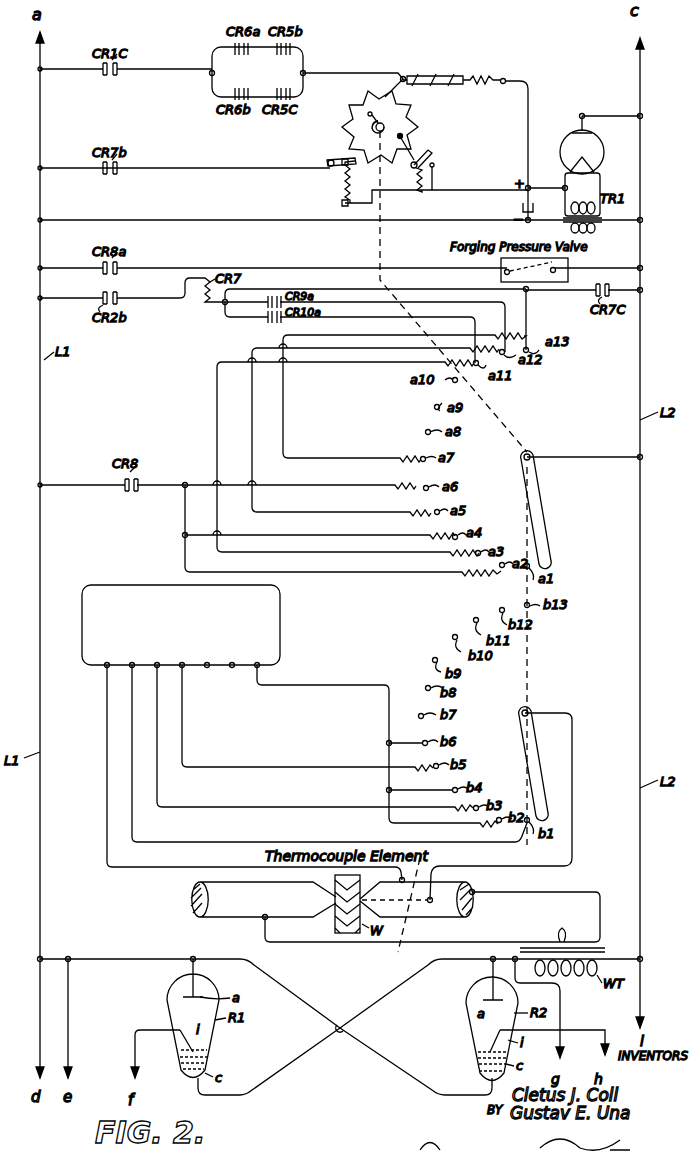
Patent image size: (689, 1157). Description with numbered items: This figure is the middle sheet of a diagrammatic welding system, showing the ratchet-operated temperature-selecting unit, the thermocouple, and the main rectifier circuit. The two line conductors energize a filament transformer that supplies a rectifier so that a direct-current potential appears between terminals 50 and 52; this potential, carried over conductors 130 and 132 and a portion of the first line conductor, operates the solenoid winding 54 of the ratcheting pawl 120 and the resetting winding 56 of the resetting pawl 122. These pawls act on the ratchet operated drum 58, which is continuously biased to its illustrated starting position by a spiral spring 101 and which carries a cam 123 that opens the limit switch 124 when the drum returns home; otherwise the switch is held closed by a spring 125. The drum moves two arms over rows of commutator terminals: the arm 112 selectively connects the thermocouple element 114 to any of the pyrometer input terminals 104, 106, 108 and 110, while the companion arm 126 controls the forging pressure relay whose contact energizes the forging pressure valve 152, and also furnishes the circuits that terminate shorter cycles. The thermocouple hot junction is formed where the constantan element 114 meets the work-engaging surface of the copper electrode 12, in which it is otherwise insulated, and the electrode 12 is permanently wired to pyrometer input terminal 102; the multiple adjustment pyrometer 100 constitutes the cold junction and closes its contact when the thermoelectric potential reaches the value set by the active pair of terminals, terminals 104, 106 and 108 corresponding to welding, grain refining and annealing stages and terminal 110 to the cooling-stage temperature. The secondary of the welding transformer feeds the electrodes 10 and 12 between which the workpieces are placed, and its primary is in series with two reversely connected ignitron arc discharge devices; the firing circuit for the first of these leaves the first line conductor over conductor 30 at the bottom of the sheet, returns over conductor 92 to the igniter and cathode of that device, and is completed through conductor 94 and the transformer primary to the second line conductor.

The electrode 10 is at (304, 917).
The copper electrode 12 is at (455, 917).
The conductor 30 is at (68, 1012).
The terminal 50 is at (530, 187).
The terminal 52 is at (531, 219).
The operating solenoid winding 54 is at (427, 78).
The resetting winding 56 is at (340, 203).
The ratchet operated drum 58 is at (398, 120).
The conductor 92 is at (136, 1062).
The conductor 94 is at (350, 1030).
The multiple adjustment pyrometer 100 is at (283, 611).
The spiral spring 101 is at (392, 108).
The pyrometer input terminal 102 is at (104, 668).
The pyrometer input terminal 104 is at (129, 668).
The pyrometer input terminal 106 is at (155, 668).
The pyrometer input terminal 108 is at (180, 668).
The pyrometer input terminal 110 is at (260, 669).
The arm 112 is at (540, 760).
The thermocouple element 114 is at (399, 915).
The ratcheting pawl 120 is at (400, 75).
The resetting pawl 122 is at (326, 160).
The cam 123 is at (403, 136).
The limit switch 124 is at (420, 158).
The spring 125 is at (422, 192).
The companion arm 126 is at (541, 496).
The conductor 130 is at (530, 112).
The conductor 132 is at (382, 236).
The forging pressure valve 152 is at (560, 266).